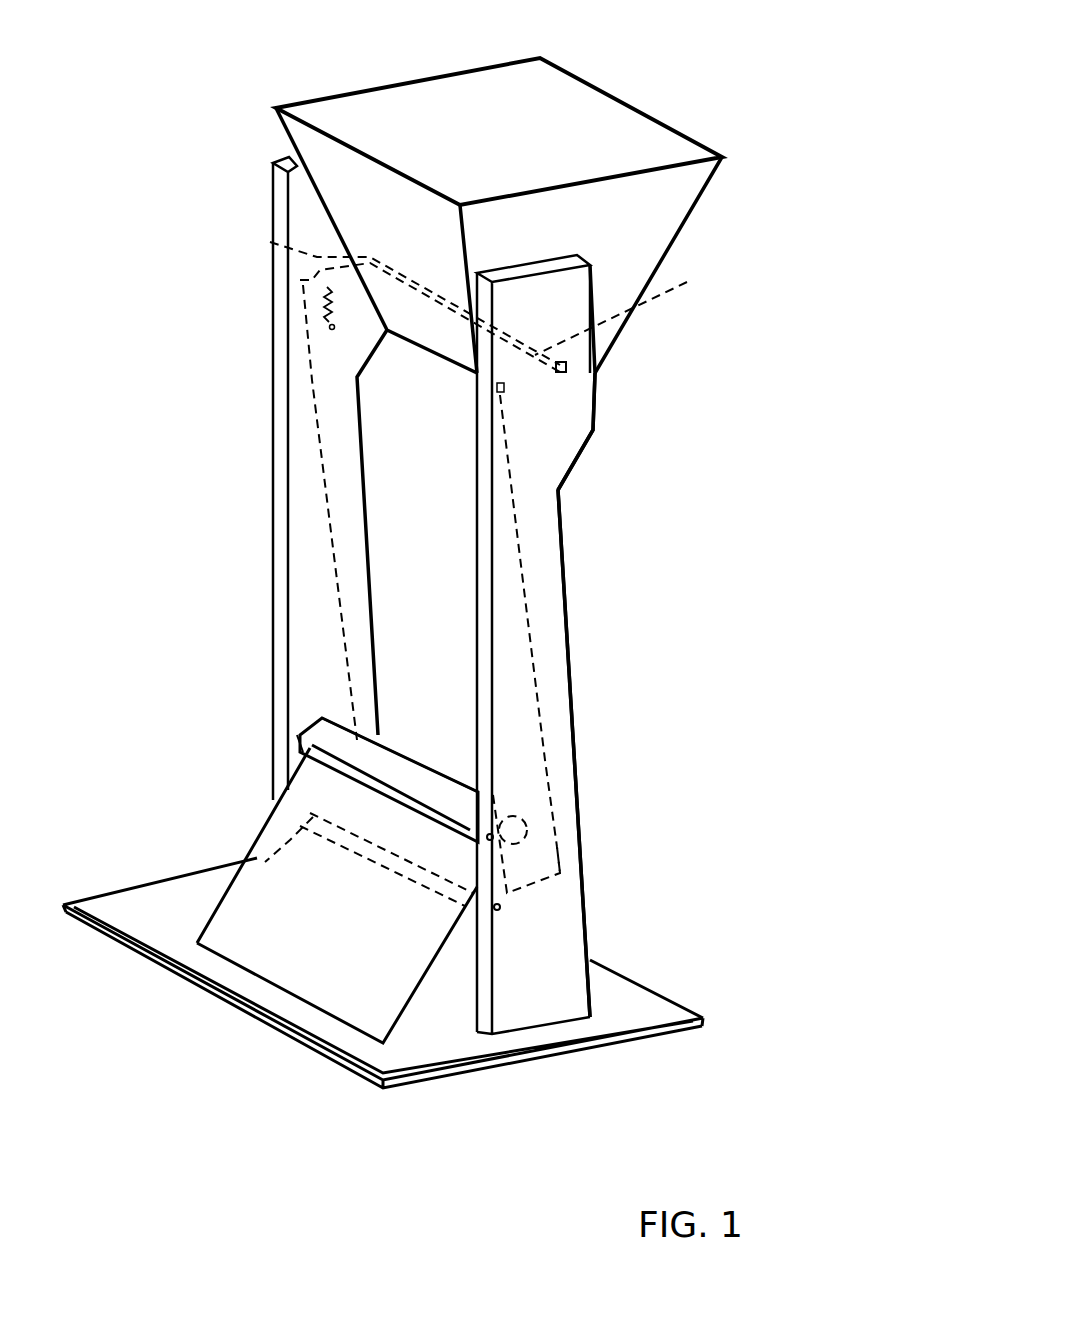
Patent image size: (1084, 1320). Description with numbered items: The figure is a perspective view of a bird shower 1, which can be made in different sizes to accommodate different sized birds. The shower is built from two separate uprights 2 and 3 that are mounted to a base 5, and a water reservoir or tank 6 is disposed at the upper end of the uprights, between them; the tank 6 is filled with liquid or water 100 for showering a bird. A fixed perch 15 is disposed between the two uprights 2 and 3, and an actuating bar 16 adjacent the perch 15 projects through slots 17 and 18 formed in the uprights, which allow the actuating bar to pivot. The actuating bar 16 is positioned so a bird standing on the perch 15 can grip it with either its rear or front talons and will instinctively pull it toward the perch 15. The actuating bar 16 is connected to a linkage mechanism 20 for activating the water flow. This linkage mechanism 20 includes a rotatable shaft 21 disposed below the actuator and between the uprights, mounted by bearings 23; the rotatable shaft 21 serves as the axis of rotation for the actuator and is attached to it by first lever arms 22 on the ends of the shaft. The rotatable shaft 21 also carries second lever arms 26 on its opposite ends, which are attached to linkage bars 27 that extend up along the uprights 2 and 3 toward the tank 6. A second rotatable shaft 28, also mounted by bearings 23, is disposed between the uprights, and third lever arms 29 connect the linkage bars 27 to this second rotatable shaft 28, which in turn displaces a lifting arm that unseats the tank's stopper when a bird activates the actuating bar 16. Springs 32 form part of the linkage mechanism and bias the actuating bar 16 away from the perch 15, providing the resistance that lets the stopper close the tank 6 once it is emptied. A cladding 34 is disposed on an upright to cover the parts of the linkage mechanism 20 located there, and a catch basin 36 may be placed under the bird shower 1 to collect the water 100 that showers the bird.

The bird shower 1 is at (852, 437).
The upright 2 is at (477, 630).
The upright 3 is at (306, 613).
The base 5 is at (235, 943).
The water reservoir/tank 6 is at (622, 140).
The fixed perch 15 is at (445, 795).
The actuating bar 16 is at (310, 787).
The slot 17 is at (497, 827).
The slot 18 is at (300, 730).
The linkage mechanism 20 is at (556, 562).
The rotatable shaft 21 is at (313, 840).
The first lever arms 22 is at (310, 767).
The bearings 23 is at (570, 372).
The second lever arms 26 is at (577, 928).
The linkage bars 27 is at (333, 537).
The second rotatable shaft 28 is at (632, 303).
The third lever arms 29 is at (270, 242).
The springs 32 is at (327, 295).
The cladding 34 is at (576, 438).
The catch basin 36 is at (698, 1013).
The liquid/water 100 is at (421, 122).